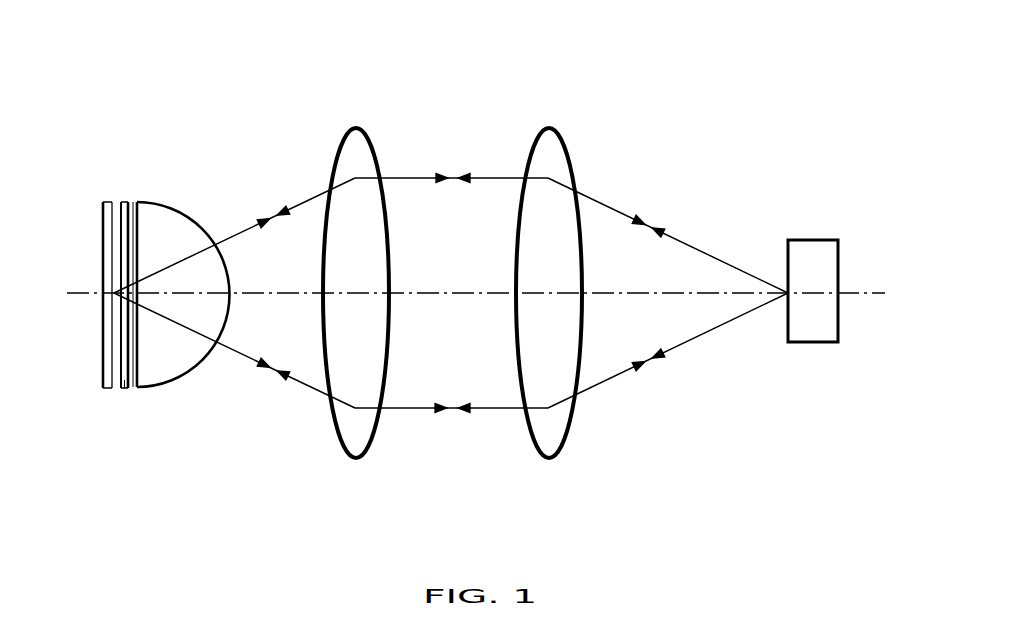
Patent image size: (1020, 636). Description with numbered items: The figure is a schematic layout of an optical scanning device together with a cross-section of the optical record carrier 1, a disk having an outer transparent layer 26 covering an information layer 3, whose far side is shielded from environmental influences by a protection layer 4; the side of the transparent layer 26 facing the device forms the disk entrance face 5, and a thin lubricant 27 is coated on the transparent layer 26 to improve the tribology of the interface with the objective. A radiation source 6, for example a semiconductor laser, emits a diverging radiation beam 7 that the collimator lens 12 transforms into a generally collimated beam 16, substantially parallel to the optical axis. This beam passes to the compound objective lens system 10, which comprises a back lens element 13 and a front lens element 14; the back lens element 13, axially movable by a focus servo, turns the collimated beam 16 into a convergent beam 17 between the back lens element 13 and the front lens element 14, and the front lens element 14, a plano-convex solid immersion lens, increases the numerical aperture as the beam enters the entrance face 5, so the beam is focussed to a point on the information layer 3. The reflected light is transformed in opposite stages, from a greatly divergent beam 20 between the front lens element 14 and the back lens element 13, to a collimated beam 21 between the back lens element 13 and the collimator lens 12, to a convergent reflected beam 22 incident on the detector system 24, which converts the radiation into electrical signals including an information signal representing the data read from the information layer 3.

The optical record carrier 1 is at (117, 277).
The information layer 3 is at (114, 345).
The protection layer 4 is at (108, 316).
The disk entrance face 5 is at (127, 357).
The radiation source 6 is at (786, 297).
The diverging radiation beam 7 is at (655, 362).
The compound objective lens system 10 is at (390, 92).
The collimator lens 12 is at (549, 137).
The back lens element 13 is at (353, 137).
The front lens element 14 is at (173, 220).
The collimated beam 16 is at (463, 410).
The convergent beam 17 is at (298, 386).
The greatly divergent beam 20 is at (262, 222).
The collimated beam 21 is at (438, 175).
The convergent reflected beam 22 is at (622, 208).
The detector system 24 is at (813, 240).
The transparent layer 26 is at (122, 374).
The lubricant 27 is at (128, 390).